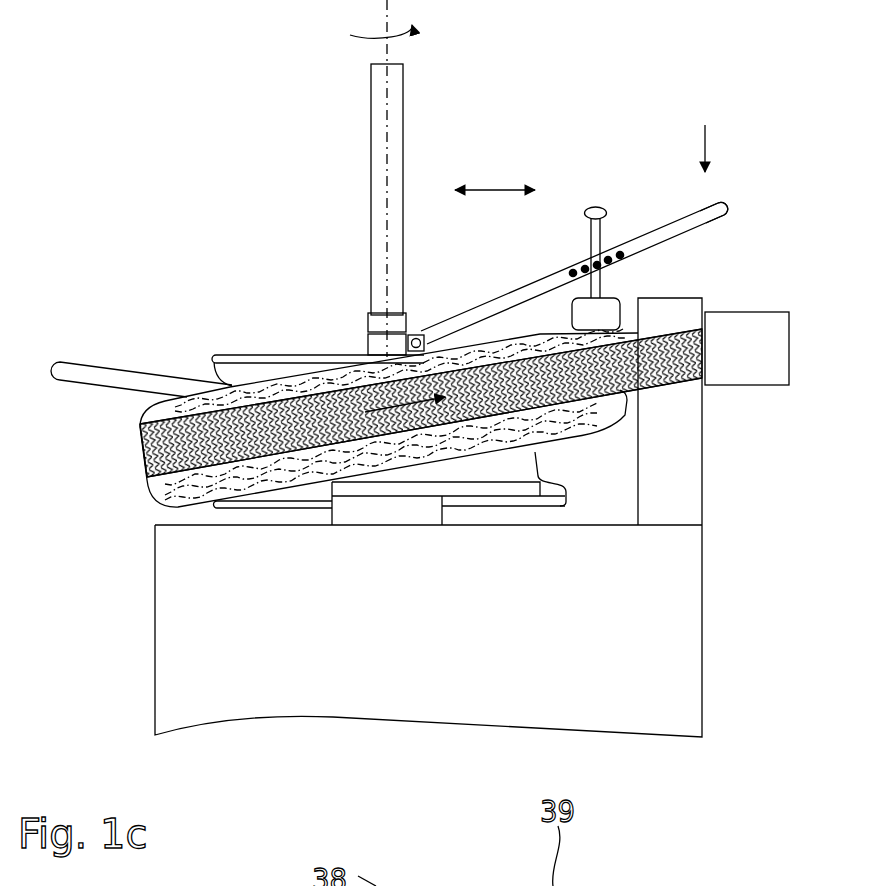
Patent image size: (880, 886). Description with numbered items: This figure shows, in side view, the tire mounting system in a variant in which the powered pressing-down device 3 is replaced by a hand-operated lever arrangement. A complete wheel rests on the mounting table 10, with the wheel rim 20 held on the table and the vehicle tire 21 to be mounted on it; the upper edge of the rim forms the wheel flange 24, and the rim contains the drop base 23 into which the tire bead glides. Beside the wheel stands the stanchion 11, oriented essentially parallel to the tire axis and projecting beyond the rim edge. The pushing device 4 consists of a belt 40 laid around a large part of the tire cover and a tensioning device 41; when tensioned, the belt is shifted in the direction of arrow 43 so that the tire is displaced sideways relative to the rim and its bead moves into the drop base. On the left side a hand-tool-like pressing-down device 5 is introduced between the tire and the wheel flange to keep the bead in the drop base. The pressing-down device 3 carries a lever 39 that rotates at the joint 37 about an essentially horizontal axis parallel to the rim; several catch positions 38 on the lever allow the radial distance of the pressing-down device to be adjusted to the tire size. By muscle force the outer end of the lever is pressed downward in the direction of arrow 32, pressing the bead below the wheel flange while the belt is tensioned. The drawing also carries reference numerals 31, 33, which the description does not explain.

The pressing-down device 3 is at (612, 310).
The pushing device 4 is at (750, 287).
The pressing-down device 5 is at (70, 362).
The mounting table 10 is at (233, 525).
The stanchion 11 is at (374, 182).
The wheel rim 20 is at (492, 478).
The vehicle tire 21 is at (173, 493).
The drop base 23 is at (556, 453).
The wheel flange 24 is at (212, 360).
The horizontal movement 31 is at (487, 192).
The arrow 32 is at (708, 145).
The rotary drive shaft 33 is at (386, 98).
The joint 37 is at (445, 318).
The catch positions 38 is at (616, 230).
The lever 39 is at (724, 206).
The belt 40 is at (163, 447).
The tensioning device 41 is at (750, 377).
The arrow 43 is at (405, 402).